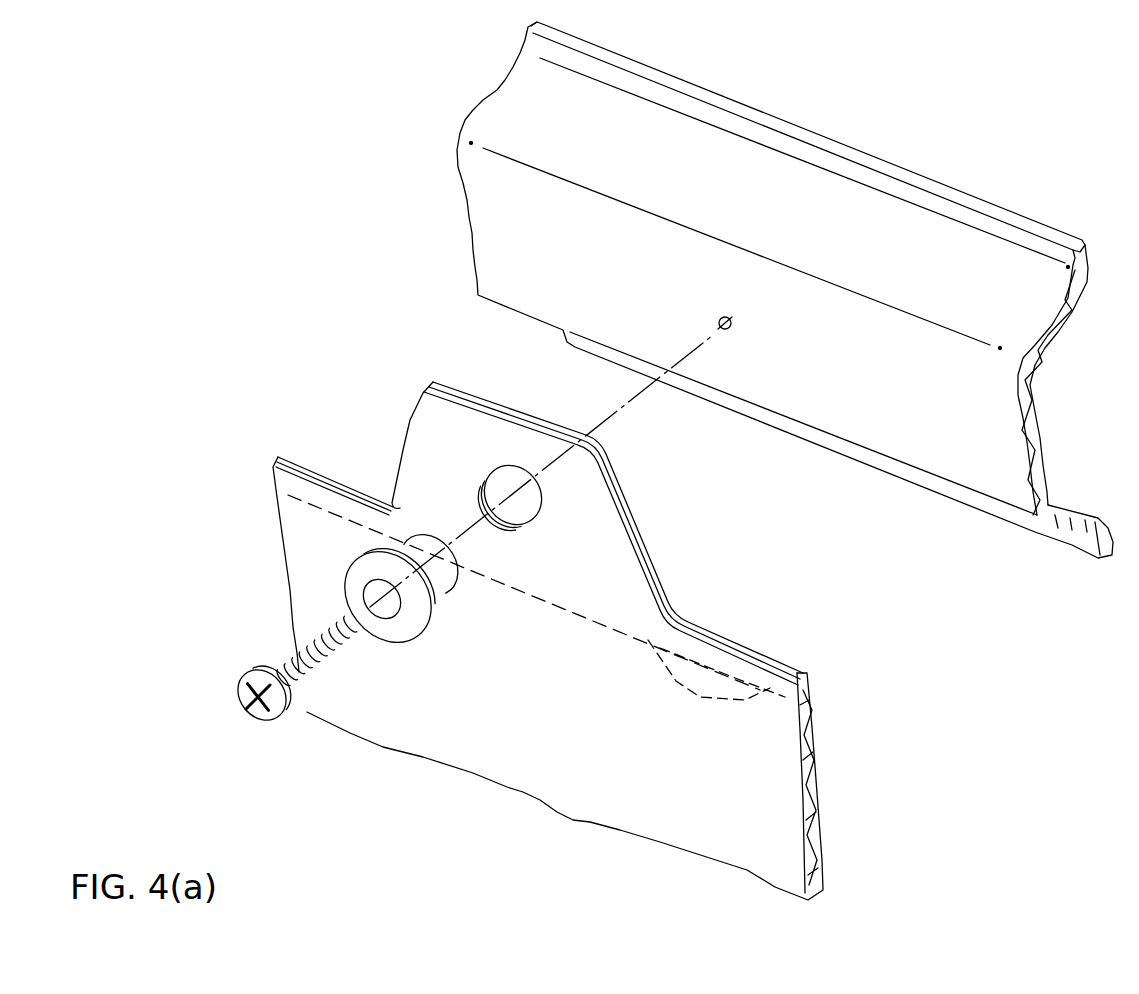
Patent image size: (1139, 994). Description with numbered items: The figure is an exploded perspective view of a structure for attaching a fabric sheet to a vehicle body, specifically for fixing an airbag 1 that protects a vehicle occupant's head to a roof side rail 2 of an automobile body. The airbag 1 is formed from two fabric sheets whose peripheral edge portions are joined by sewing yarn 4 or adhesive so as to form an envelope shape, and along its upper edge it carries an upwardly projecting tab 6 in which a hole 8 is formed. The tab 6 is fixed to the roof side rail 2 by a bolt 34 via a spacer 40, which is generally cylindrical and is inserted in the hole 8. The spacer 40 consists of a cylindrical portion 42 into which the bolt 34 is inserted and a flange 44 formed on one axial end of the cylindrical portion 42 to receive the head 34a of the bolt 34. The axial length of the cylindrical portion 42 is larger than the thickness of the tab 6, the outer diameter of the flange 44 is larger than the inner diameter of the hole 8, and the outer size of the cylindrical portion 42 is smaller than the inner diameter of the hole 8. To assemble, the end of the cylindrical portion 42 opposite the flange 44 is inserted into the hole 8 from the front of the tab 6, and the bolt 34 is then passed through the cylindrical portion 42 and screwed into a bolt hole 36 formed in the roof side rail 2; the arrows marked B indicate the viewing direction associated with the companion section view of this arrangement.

The airbag 1 is at (548, 645).
The roof side rail 2 is at (781, 290).
The sewing yarn 4 is at (673, 688).
The tab 6 is at (628, 583).
The hole 8 is at (517, 527).
The bolt 34 is at (292, 680).
The head 34a is at (292, 722).
The bolt hole 36 is at (718, 318).
The spacer 40 is at (411, 598).
The cylindrical portion 42 is at (437, 572).
The flange 44 is at (430, 625).
The section B-B viewing direction B is at (938, 157).